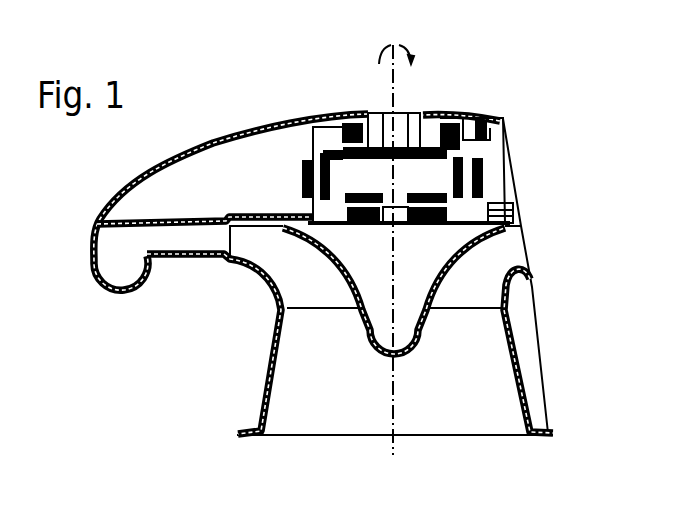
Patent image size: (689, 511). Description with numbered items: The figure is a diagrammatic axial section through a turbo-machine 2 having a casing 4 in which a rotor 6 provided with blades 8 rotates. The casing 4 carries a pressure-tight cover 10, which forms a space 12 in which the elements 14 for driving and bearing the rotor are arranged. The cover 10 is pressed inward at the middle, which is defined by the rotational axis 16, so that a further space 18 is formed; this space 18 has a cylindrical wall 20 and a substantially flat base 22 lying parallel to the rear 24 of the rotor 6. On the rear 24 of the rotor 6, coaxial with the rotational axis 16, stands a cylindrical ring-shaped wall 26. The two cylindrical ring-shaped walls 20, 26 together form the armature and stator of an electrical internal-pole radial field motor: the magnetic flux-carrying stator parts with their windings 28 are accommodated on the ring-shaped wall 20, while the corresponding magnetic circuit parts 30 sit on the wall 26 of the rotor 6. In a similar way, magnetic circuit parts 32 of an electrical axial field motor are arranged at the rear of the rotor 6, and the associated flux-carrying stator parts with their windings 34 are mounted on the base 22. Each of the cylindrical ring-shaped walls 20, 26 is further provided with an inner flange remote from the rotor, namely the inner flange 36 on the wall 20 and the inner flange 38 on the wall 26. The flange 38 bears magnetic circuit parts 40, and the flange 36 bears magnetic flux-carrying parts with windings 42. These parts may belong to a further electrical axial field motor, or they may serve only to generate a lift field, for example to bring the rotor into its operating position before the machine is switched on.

The turbo-machine 2 is at (252, 403).
The casing 4 is at (278, 328).
The rotor 6 is at (411, 358).
The blades 8 is at (280, 254).
The pressure-tight cover 10 is at (139, 172).
The space 12 is at (217, 153).
The elements for driving and bearing the rotor 14 is at (507, 118).
The rotational axis 16 is at (383, 449).
The space 18 is at (418, 170).
The cylindrical wall 20 is at (487, 147).
The base 22 is at (402, 223).
The rear 24 is at (513, 215).
The cylindrical ring-shaped wall 26 is at (487, 203).
The windings 28 is at (303, 158).
The magnetic circuit parts 30 is at (490, 170).
The magnetic circuit parts 32 is at (375, 223).
The windings 34 is at (373, 197).
The inner flange 36 is at (455, 150).
The inner flange 38 is at (480, 123).
The magnetic circuit parts 40 is at (351, 123).
The windings 42 is at (331, 150).